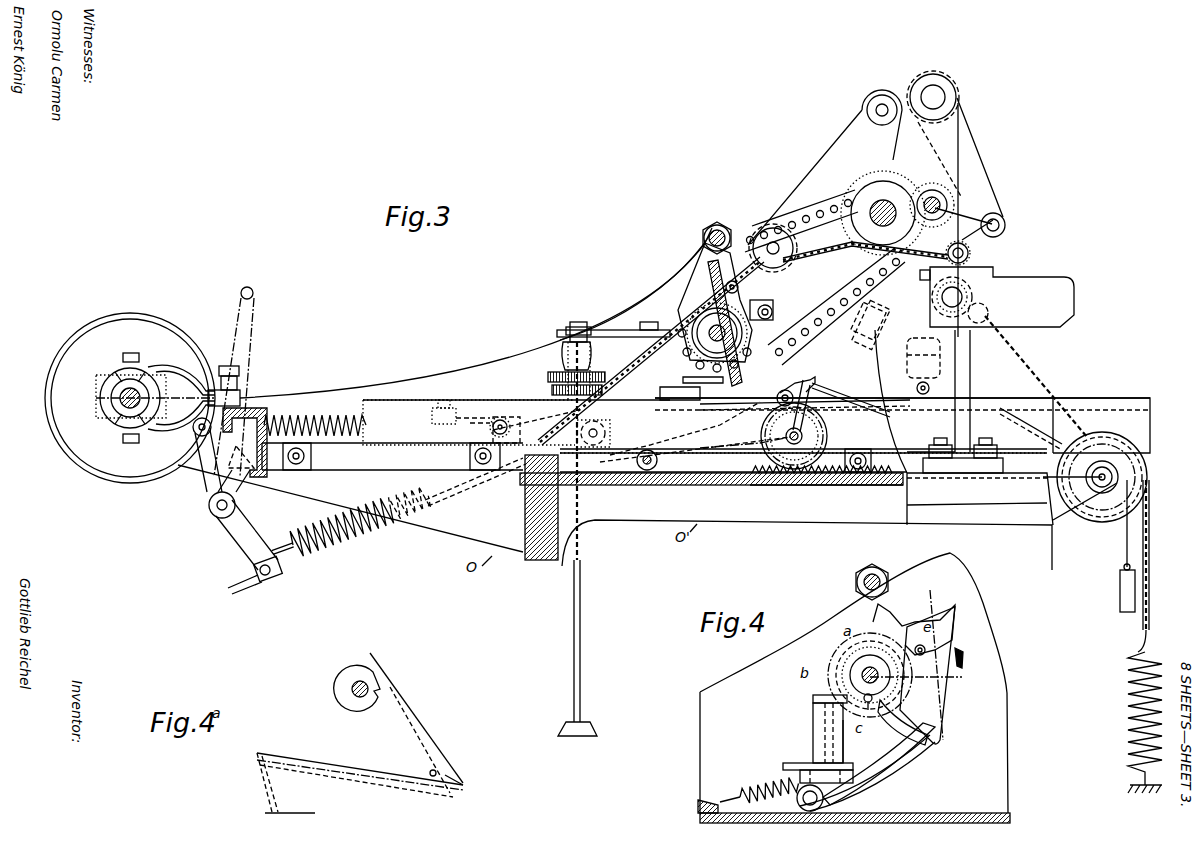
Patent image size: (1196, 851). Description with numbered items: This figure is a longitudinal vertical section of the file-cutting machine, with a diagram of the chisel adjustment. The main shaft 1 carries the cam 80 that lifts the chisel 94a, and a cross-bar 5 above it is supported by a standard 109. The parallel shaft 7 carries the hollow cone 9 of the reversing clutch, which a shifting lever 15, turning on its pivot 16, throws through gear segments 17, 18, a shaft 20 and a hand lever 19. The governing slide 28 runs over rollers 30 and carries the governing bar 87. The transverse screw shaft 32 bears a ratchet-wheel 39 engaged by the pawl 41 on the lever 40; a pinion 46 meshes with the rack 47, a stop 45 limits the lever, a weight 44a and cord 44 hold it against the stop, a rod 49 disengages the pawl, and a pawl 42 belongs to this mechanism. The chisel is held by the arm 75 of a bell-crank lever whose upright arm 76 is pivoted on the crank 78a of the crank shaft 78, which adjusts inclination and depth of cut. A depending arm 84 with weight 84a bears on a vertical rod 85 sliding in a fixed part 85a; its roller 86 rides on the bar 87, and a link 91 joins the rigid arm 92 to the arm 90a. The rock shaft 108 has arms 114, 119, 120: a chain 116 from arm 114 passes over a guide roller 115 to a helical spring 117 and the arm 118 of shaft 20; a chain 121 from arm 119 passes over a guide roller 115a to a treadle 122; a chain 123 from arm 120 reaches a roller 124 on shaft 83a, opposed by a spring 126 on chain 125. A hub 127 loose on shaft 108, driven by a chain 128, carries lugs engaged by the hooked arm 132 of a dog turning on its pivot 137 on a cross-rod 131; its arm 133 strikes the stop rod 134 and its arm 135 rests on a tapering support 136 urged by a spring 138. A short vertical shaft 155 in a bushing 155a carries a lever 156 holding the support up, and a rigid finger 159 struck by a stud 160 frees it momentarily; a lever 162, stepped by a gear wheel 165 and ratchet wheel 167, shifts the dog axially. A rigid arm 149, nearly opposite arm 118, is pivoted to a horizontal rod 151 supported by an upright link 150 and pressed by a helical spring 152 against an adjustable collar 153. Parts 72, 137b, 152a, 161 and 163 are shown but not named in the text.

In FIG. 3, the main driving shaft 1 is at (888, 200).
In FIG. 4A, the main driving shaft 1 is at (360, 700).
In FIG. 3, the guide pulley 5 is at (883, 94).
In FIG. 3, the hub 7 is at (112, 410).
In FIG. 3, the hand wheel 9 is at (47, 393).
In FIG. 3, the arm 15 is at (170, 370).
In FIG. 3, the bolt 16 is at (226, 366).
In FIG. 3, the link 17 is at (222, 482).
In FIG. 3, the clamp 18 is at (252, 470).
In FIG. 3, the lever 19 is at (250, 320).
In FIG. 3, the pivot 20 is at (210, 507).
In FIG. 3, the pulley 28 is at (1148, 410).
In FIG. 3, the frame bolts 30 is at (300, 466).
In FIG. 3, the sprocket wheel 32 is at (815, 438).
In FIG. 3, the rod 39 is at (830, 390).
In FIG. 3, the arm 40 is at (810, 382).
In FIG. 3, the pivot 41 is at (781, 392).
In FIG. 3, the pawl 42 is at (792, 386).
In FIG. 3, the rod 44 is at (1022, 416).
In FIG. 3, the weight 44a is at (1120, 594).
In FIG. 3, the bar 45 is at (856, 400).
In FIG. 3, the rack base 46 is at (803, 478).
In FIG. 3, the rack 47 is at (762, 480).
In FIG. 3, the link 49 is at (756, 432).
In FIG. 3, the housing 72 is at (997, 297).
In FIG. 4A, the arm 75 is at (314, 770).
In FIG. 4A, the arm 76 is at (432, 736).
In FIG. 3, the pivot 78 is at (970, 290).
In FIG. 4A, the pivot 78 is at (430, 770).
In FIG. 3, the arm 78a is at (957, 345).
In FIG. 4A, the arm 78a is at (466, 788).
In FIG. 4A, the cam disk 80 is at (350, 676).
In FIG. 3, the roller 83a is at (930, 196).
In FIG. 3, the block 84 is at (890, 310).
In FIG. 3, the block 84a is at (876, 340).
In FIG. 3, the block 85 is at (908, 352).
In FIG. 3, the block 85a is at (907, 358).
In FIG. 3, the pin 86 is at (916, 387).
In FIG. 3, the frame rail 87 is at (985, 398).
In FIG. 3, the arm 90a is at (970, 135).
In FIG. 3, the roller 91 is at (994, 237).
In FIG. 3, the gear 92 is at (946, 256).
In FIG. 4A, the stop 94a is at (278, 800).
In FIG. 3, the lever 108 is at (676, 290).
In FIG. 4, the lever 108 is at (962, 678).
In FIG. 3, the arm 109 is at (836, 160).
In FIG. 3, the bar 114 is at (689, 385).
In FIG. 3, the roller 115 is at (606, 432).
In FIG. 3, the roller 115a is at (637, 460).
In FIG. 3, the rod 116 is at (460, 484).
In FIG. 3, the spring 117 is at (372, 532).
In FIG. 3, the arm 118 is at (235, 540).
In FIG. 3, the pivot 119 is at (749, 299).
In FIG. 3, the cam 120 is at (710, 262).
In FIG. 3, the chain rod 121 is at (640, 360).
In FIG. 3, the foot 122 is at (590, 728).
In FIG. 3, the chain 123 is at (800, 254).
In FIG. 3, the link 124 is at (955, 203).
In FIG. 3, the chain 125 is at (1050, 344).
In FIG. 3, the spring 126 is at (1130, 688).
In FIG. 4, the cam 127 is at (848, 660).
In FIG. 3, the chain 128 is at (826, 296).
In FIG. 4, the pointer 131 is at (958, 645).
In FIG. 4, the pawl 132 is at (900, 610).
In FIG. 4, the lever 133 is at (925, 640).
In FIG. 3, the shaft 134 is at (719, 224).
In FIG. 4, the shaft 134 is at (880, 568).
In FIG. 4, the arm 135 is at (920, 737).
In FIG. 3, the lever 136 is at (712, 440).
In FIG. 4, the lever 136 is at (886, 770).
In FIG. 3, the pivot 137 is at (670, 470).
In FIG. 4, the pivot 137 is at (846, 798).
In FIG. 4, the lever arm 137b is at (905, 790).
In FIG. 4, the spring 138 is at (752, 796).
In FIG. 3, the link 149 is at (193, 438).
In FIG. 3, the bracket 150 is at (510, 430).
In FIG. 3, the spring 151 is at (322, 412).
In FIG. 3, the plate 152 is at (350, 410).
In FIG. 3, the clamp 152a is at (258, 410).
In FIG. 3, the slide 153 is at (452, 406).
In FIG. 4, the slide 155 is at (813, 714).
In FIG. 4, the slide part 155a is at (823, 741).
In FIG. 4, the bar 156 is at (783, 766).
In FIG. 4, the head 159 is at (813, 698).
In FIG. 4, the pin 160 is at (870, 706).
In FIG. 3, the bolt 161 is at (576, 326).
In FIG. 3, the bar 162 is at (600, 330).
In FIG. 3, the bracket 163 is at (557, 334).
In FIG. 3, the gear 165 is at (549, 374).
In FIG. 3, the gear 167 is at (552, 390).